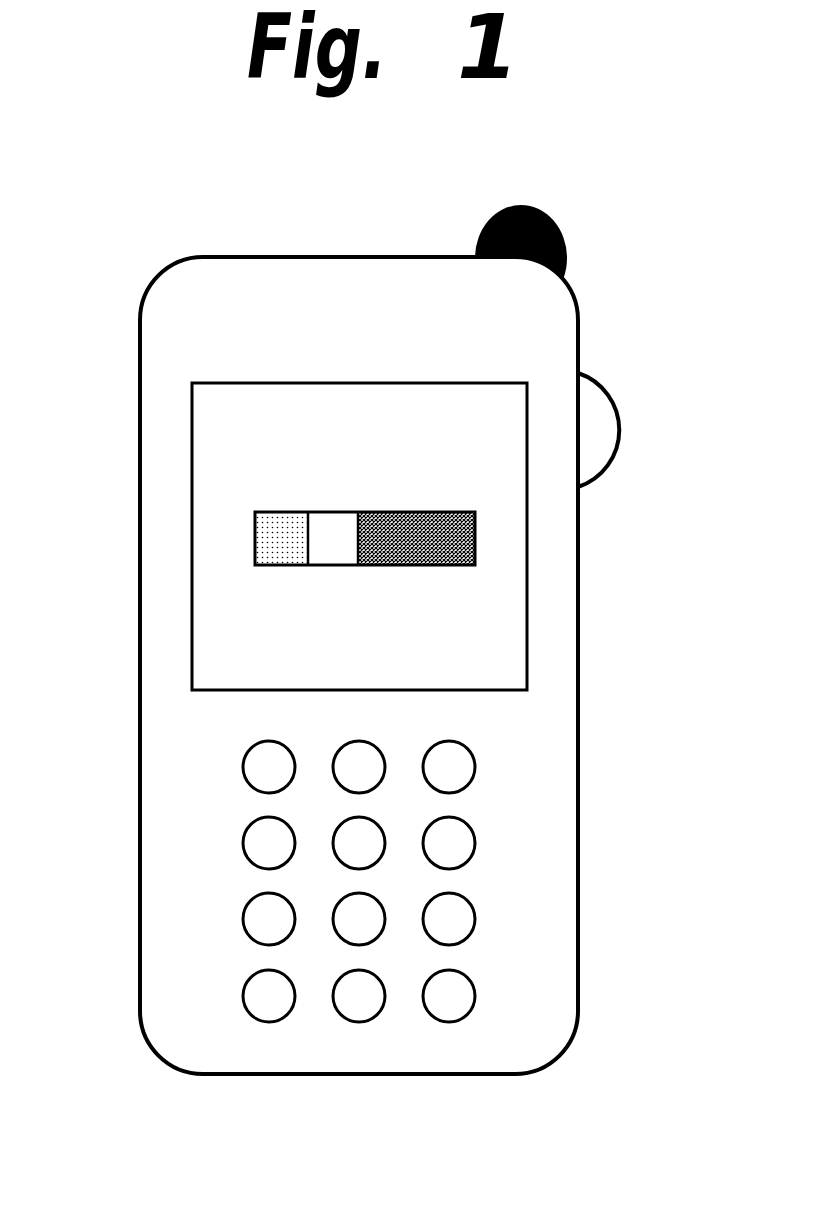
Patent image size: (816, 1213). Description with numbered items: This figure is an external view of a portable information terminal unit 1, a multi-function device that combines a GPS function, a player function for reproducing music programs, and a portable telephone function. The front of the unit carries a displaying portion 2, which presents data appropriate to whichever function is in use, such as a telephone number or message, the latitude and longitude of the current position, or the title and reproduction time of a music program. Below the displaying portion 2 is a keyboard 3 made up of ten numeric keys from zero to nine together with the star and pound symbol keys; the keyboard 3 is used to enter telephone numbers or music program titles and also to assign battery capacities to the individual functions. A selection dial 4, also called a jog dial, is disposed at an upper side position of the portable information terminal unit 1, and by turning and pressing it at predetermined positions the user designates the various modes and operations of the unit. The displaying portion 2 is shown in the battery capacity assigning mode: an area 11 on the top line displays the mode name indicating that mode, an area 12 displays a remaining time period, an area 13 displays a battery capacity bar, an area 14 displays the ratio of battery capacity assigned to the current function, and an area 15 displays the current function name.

The portable information terminal unit 1 is at (172, 240).
The displaying portion 2 is at (228, 462).
The keyboard 3 is at (243, 843).
The selection dial 4 is at (593, 410).
The area 11 is at (262, 425).
The area 12 is at (295, 478).
The area 13 is at (268, 537).
The area 14 is at (235, 597).
The area 15 is at (242, 665).